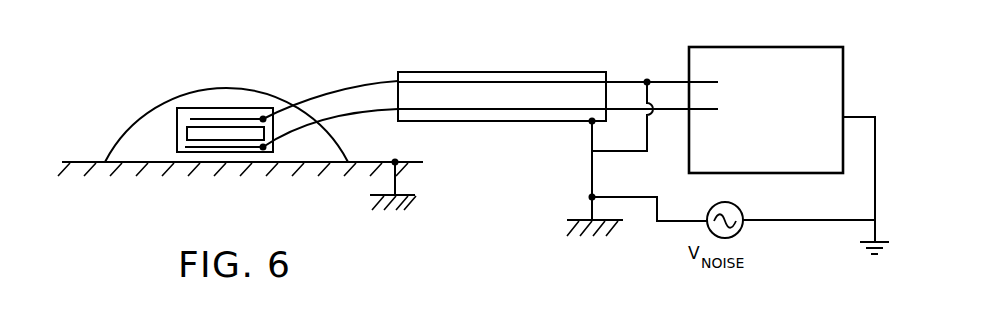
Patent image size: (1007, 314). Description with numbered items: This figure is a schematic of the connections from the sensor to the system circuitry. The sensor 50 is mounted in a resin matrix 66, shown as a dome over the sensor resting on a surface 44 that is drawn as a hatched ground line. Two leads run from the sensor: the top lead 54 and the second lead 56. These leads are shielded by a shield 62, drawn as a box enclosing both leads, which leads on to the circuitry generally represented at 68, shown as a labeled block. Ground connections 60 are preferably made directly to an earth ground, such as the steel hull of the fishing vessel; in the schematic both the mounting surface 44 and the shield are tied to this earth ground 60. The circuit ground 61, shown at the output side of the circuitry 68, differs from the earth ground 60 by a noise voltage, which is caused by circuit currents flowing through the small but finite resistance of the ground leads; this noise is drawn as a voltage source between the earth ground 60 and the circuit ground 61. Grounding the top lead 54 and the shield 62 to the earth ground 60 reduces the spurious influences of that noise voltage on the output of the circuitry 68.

The ground plane surface 44 is at (78, 161).
The sensor 50 is at (228, 118).
The top lead 54 is at (342, 84).
The lead 56 is at (367, 111).
The earth ground 60 is at (410, 196).
The circuit ground 61 is at (862, 246).
The shield 62 is at (485, 72).
The resin matrix 66 is at (140, 118).
The circuitry 68 is at (751, 46).